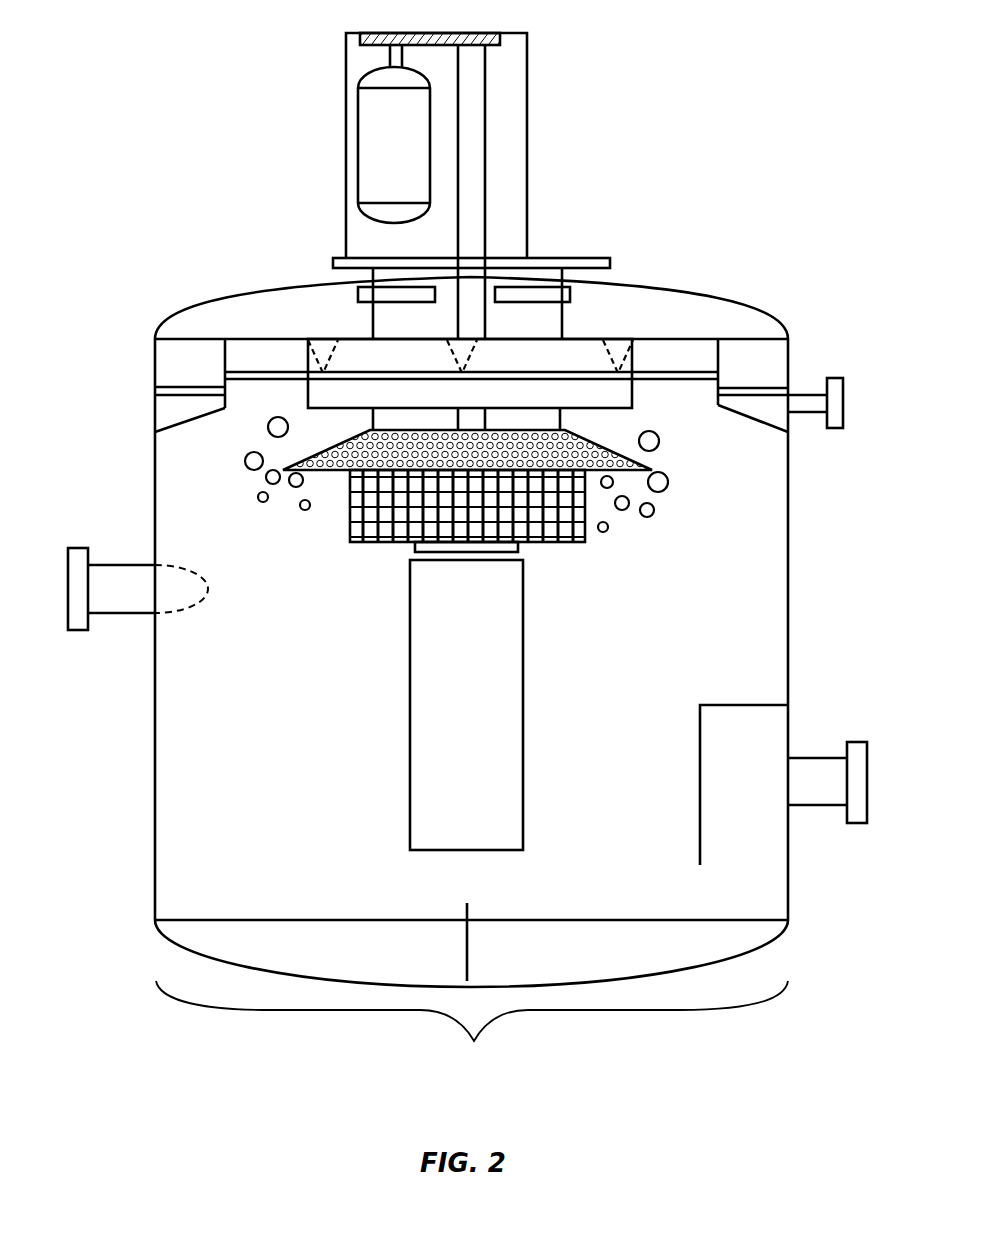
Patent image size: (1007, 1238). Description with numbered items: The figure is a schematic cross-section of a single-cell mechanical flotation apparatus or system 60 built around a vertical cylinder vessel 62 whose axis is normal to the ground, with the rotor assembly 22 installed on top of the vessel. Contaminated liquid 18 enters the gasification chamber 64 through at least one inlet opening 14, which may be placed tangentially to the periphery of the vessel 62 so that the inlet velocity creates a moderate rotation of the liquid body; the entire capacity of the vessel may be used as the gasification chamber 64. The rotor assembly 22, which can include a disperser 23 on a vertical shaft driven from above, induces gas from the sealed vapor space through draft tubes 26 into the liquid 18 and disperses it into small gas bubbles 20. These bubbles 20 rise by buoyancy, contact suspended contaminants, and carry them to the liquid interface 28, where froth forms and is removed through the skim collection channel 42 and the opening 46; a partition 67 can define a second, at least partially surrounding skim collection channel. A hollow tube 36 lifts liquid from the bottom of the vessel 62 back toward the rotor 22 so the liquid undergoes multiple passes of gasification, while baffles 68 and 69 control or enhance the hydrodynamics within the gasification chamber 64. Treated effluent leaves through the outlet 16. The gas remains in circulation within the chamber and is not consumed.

The apparatus or system 60 is at (190, 66).
The draft tubes 26 is at (540, 297).
The liquid interface 28 is at (243, 370).
The skim collection channel 42 is at (378, 368).
The partition 67 is at (718, 350).
The opening 46 is at (805, 395).
The inlet opening 14 is at (117, 565).
The gas bubbles 20 is at (263, 504).
The disperser 23 is at (371, 544).
The rotor assembly 22 is at (518, 546).
The contaminated liquid 18 is at (273, 697).
The hollow tube 36 is at (525, 703).
The vertical cylinder vessel 62 is at (153, 777).
The baffle 69 is at (700, 775).
The outlet 16 is at (805, 758).
The baffle 68 is at (465, 960).
The gasification chamber 64 is at (472, 1030).